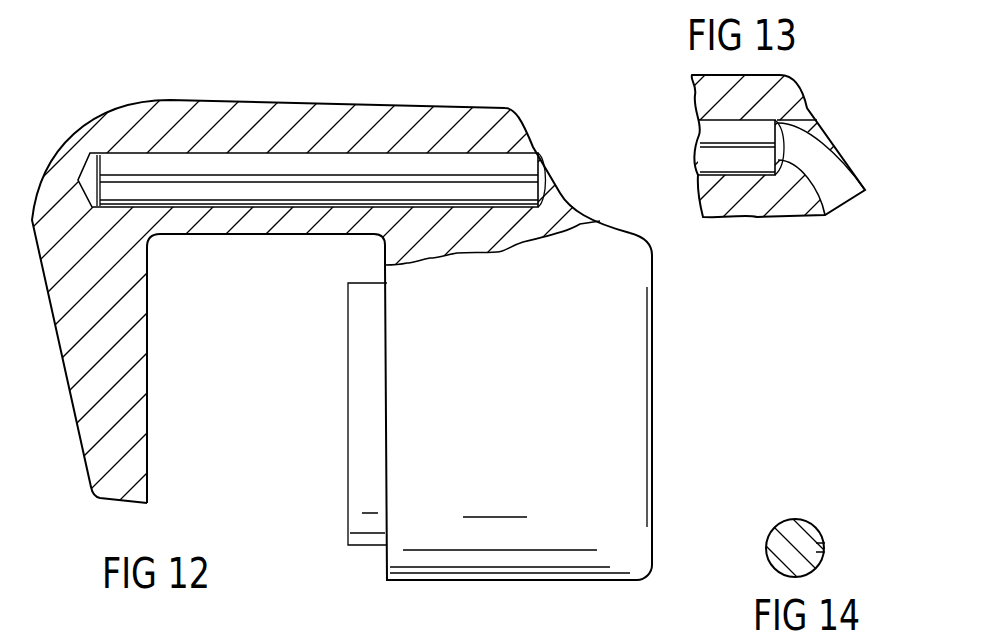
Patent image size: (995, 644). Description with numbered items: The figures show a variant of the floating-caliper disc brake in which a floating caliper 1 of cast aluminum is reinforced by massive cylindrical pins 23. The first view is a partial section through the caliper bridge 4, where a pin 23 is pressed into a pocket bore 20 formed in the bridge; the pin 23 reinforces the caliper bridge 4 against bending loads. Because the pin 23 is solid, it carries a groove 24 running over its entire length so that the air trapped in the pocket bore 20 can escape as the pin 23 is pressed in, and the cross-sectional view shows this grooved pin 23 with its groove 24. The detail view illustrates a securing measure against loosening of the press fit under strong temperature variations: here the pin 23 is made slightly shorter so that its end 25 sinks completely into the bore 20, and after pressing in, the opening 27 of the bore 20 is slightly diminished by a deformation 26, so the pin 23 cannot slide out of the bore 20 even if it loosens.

In FIG. 12, the floating caliper 1 is at (162, 88).
In FIG. 13, the floating caliper 1 is at (702, 229).
In FIG. 12, the caliper bridge 4 is at (405, 117).
In FIG. 12, the pocket bore 20 is at (300, 153).
In FIG. 13, the pocket bore 20 is at (757, 215).
In FIG. 12, the massive cylindrical pin 23 is at (520, 160).
In FIG. 13, the massive cylindrical pin 23 is at (713, 135).
In FIG. 14, the massive cylindrical pin 23 is at (772, 548).
In FIG. 12, the groove 24 is at (543, 177).
In FIG. 14, the groove 24 is at (826, 548).
In FIG. 13, the end 25 is at (825, 215).
In FIG. 13, the deformation 26 is at (797, 125).
In FIG. 13, the opening 27 is at (820, 157).